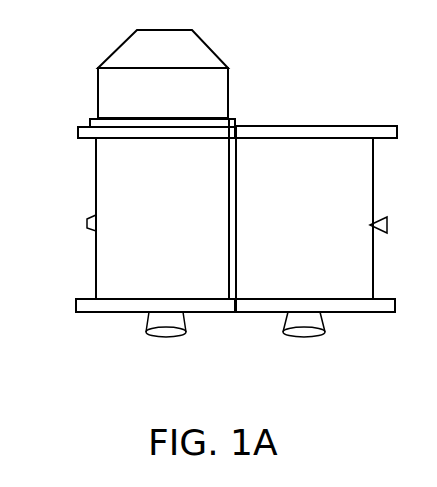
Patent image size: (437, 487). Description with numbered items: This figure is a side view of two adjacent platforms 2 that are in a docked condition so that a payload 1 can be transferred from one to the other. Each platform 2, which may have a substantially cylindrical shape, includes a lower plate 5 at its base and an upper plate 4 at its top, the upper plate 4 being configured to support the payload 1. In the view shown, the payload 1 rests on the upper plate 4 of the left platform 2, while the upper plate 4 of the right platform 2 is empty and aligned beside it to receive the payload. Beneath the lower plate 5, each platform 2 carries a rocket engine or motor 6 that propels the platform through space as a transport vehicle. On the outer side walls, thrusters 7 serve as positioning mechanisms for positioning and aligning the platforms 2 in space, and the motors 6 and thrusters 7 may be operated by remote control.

The payload 1 is at (212, 50).
The platform 2 is at (94, 175).
The upper plate 4 is at (85, 125).
The lower plate 5 is at (92, 307).
The rocket engine or motor 6 is at (173, 336).
The thruster 7 is at (86, 227).